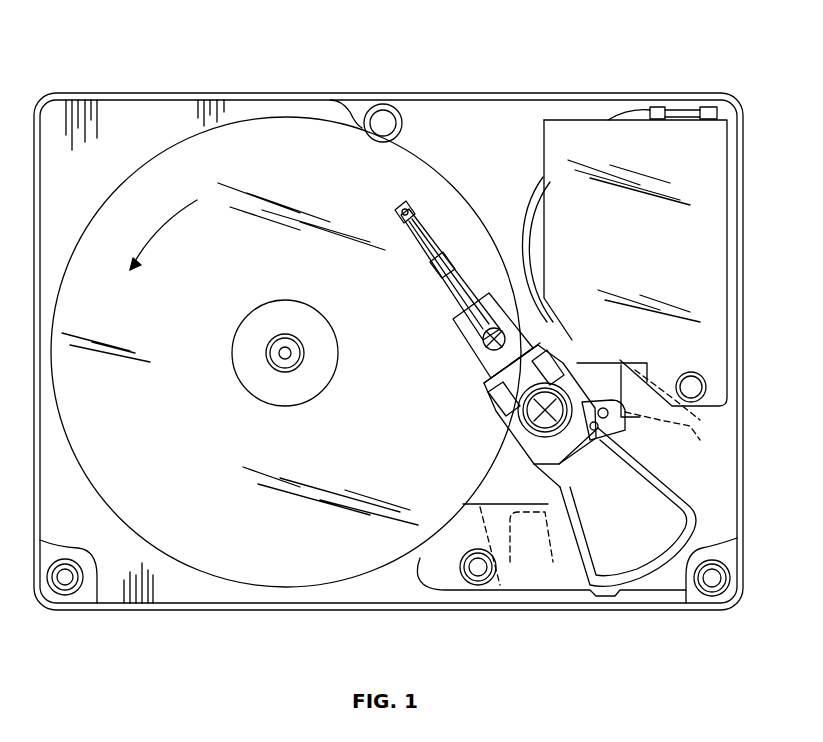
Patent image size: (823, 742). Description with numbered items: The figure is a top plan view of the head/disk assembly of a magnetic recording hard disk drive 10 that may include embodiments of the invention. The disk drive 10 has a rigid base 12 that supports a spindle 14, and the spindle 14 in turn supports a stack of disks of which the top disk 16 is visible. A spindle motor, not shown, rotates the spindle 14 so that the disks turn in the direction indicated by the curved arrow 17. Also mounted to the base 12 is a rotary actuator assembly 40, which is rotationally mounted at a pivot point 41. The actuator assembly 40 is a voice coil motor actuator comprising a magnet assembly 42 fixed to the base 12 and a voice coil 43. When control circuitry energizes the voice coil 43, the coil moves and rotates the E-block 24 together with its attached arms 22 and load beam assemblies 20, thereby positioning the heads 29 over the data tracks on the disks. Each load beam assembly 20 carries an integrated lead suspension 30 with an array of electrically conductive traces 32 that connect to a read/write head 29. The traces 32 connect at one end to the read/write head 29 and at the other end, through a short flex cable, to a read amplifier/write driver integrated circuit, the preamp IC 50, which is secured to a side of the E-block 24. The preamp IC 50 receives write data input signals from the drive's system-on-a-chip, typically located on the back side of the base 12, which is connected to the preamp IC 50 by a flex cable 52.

The hard disk drive 10 is at (100, 36).
The rigid base 12 is at (178, 612).
The spindle 14 is at (290, 300).
The top disk 16 is at (418, 160).
The curved arrow 17 is at (164, 224).
The load beam assembly 20 is at (378, 228).
The arm 22 is at (472, 350).
The E-block 24 is at (495, 400).
The read/write head 29 is at (402, 210).
The integrated lead suspension 30 is at (420, 223).
The traces 32 is at (436, 266).
The rotary actuator assembly 40 is at (497, 468).
The pivot point 41 is at (512, 428).
The magnet assembly 42 is at (643, 405).
The voice coil 43 is at (648, 490).
The preamp IC 50 is at (585, 363).
The flex cable 52 is at (532, 195).